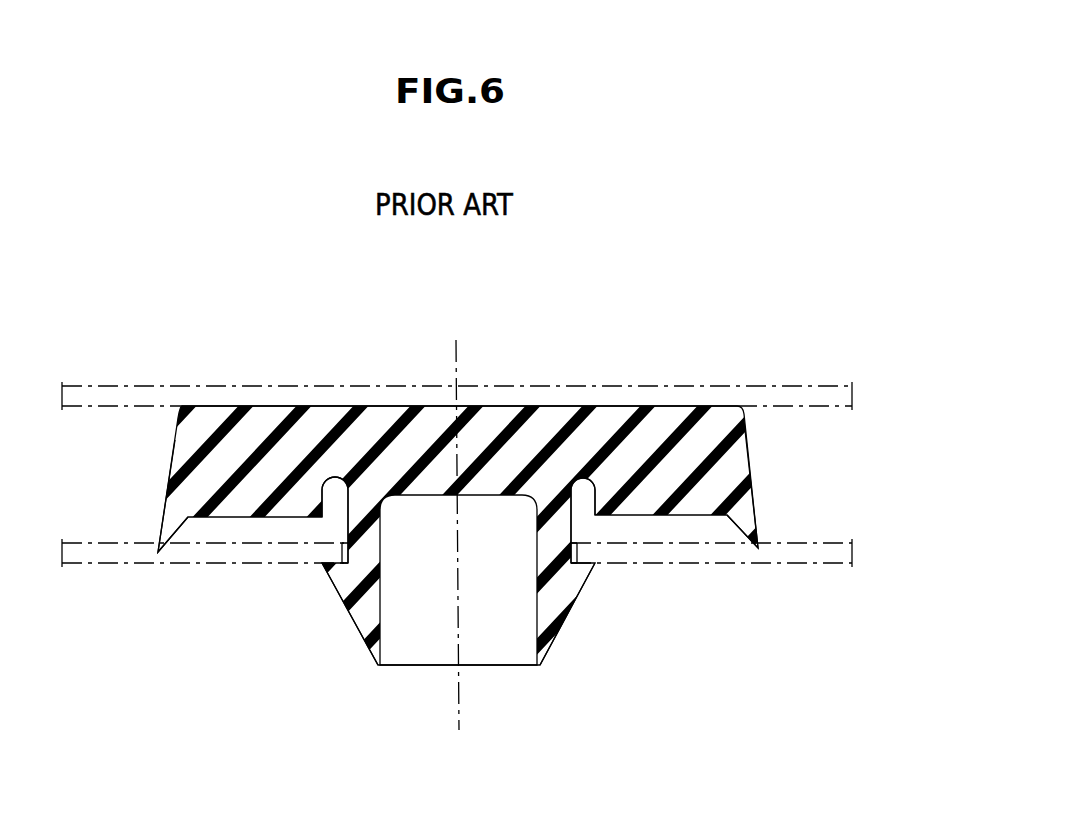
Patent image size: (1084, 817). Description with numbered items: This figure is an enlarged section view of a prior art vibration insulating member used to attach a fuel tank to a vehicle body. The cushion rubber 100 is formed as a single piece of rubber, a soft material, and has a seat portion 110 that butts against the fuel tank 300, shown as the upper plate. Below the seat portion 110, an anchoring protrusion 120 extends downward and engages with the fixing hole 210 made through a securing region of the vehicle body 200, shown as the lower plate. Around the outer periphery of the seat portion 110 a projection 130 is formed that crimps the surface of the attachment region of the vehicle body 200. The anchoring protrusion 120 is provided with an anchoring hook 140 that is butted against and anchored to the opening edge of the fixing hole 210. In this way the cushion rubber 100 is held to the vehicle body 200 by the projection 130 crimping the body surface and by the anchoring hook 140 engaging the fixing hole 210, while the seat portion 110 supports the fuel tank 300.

The cushion rubber 100 is at (542, 540).
The seat portion 110 is at (338, 406).
The anchoring protrusion 120 is at (495, 667).
The projection 130 is at (182, 542).
The anchoring hook 140 is at (336, 575).
The vehicle body 200 is at (137, 565).
The fixing hole 210 is at (546, 556).
The fuel tank 300 is at (820, 386).